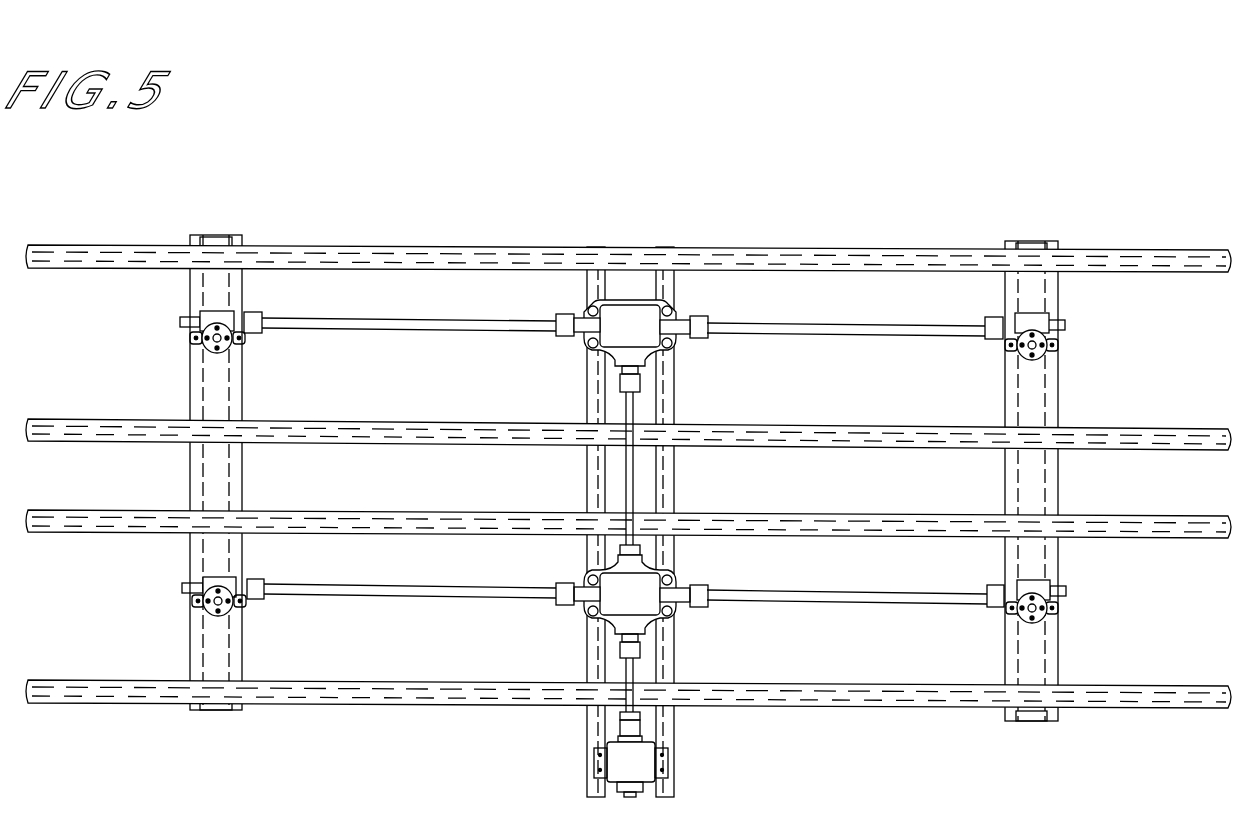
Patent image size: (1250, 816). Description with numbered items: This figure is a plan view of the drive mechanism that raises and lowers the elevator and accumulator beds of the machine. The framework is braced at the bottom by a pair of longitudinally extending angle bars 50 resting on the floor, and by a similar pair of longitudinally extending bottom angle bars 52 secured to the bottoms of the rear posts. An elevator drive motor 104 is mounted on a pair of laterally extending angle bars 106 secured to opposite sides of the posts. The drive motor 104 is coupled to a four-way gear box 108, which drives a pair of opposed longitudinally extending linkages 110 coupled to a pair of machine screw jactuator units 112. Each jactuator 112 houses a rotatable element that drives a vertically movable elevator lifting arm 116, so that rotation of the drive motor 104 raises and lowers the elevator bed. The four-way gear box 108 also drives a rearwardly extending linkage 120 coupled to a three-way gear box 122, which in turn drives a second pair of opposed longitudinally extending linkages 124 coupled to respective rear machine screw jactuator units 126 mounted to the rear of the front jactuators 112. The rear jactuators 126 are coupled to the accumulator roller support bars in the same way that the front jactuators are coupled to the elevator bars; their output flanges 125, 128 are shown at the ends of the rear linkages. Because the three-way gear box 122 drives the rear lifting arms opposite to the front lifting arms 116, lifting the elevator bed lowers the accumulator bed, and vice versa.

The longitudinally extending angle bars 50 is at (923, 520).
The longitudinally extending bottom angle bars 52 is at (858, 250).
The elevator drive motor 104 is at (668, 758).
The laterally extending angle bars 106 is at (598, 665).
The four-way gear box 108 is at (672, 582).
The longitudinally extending linkages 110 is at (470, 588).
The machine screw jactuator units 112 is at (235, 582).
The elevator lifting arm 116 is at (205, 606).
The rearwardly extending linkage 120 is at (630, 497).
The three-way gear box 122 is at (668, 318).
The longitudinally extending linkages 124 is at (478, 320).
The right upper output flange 125 is at (1060, 357).
The machine screw jactuator units 126 is at (228, 320).
The left upper output flange 128 is at (197, 350).